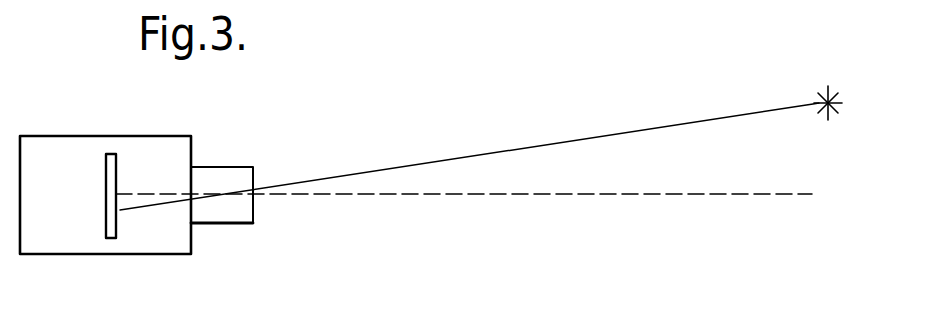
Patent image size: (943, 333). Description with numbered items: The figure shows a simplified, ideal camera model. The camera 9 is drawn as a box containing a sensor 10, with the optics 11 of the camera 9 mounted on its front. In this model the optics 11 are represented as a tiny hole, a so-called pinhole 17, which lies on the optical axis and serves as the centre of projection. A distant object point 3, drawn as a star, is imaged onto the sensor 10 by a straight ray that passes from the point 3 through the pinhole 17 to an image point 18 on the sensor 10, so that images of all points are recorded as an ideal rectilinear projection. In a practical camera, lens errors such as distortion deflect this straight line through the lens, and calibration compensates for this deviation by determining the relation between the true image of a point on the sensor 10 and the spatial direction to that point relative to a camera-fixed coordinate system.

The point 3 is at (822, 91).
The camera 9 is at (46, 160).
The sensor 10 is at (120, 158).
The optics 11 is at (230, 212).
The pinhole 17 is at (227, 195).
The image point 18 is at (123, 213).